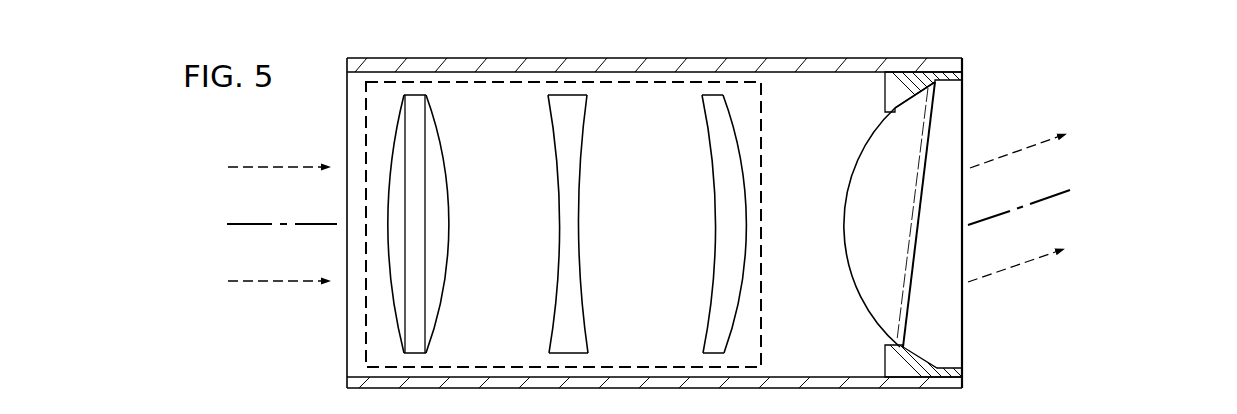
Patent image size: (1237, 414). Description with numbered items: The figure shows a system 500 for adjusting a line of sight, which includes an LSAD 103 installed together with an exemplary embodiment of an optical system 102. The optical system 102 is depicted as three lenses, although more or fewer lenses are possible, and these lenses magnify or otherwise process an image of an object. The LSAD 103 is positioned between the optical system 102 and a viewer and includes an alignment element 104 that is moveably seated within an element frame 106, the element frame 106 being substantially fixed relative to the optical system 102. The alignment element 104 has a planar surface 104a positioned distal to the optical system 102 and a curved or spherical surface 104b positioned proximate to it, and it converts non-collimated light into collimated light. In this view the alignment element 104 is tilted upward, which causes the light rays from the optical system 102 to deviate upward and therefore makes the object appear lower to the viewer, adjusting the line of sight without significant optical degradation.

The system 500 is at (290, 318).
The optical system 102 is at (766, 157).
The LSAD 103 is at (986, 349).
The alignment element 104 is at (857, 215).
The planar surface 104a is at (917, 265).
The spherical surface 104b is at (852, 284).
The element frame 106 is at (884, 84).